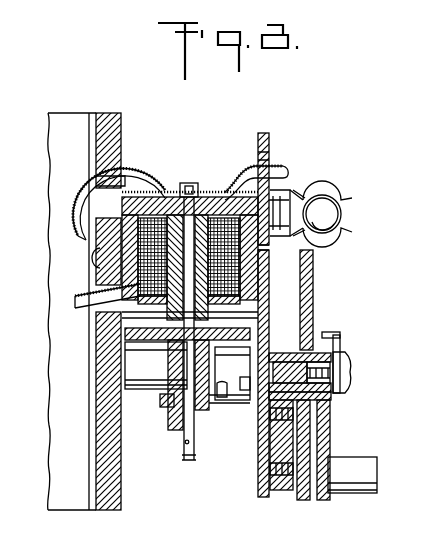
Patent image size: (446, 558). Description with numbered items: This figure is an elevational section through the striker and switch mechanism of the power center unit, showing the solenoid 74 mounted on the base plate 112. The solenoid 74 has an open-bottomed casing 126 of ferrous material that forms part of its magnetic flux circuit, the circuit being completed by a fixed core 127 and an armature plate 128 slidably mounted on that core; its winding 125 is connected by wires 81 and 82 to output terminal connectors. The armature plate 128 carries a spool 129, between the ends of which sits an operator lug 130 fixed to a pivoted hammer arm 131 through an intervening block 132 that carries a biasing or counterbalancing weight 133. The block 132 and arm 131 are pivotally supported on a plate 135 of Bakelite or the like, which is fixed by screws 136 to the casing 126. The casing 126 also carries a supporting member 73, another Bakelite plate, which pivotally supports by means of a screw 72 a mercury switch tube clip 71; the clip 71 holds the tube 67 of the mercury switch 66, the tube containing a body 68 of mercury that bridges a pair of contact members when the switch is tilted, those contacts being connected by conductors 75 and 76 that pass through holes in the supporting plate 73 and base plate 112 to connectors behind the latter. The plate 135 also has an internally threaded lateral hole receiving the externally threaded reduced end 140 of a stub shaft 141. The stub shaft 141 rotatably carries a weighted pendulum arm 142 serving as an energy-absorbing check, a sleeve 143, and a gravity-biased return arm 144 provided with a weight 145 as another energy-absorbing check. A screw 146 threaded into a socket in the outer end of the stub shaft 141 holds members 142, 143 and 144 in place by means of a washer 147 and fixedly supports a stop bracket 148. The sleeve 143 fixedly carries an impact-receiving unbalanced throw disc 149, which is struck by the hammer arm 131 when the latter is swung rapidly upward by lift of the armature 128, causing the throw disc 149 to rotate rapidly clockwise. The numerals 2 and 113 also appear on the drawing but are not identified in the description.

The apparatus 2 is at (3, 479).
The mercury switch 66 is at (353, 219).
The tube 67 is at (340, 203).
The body of mercury 68 is at (328, 228).
The mercury switch tube clip 71 is at (297, 186).
The screw 72 is at (297, 205).
The supporting member 73 is at (270, 140).
The solenoid 74 is at (157, 202).
The conductor 75 is at (238, 175).
The conductor 76 is at (218, 190).
The wire 81 is at (88, 296).
The wire 82 is at (88, 310).
The base plate 112 is at (121, 492).
The wall surface 113 is at (72, 512).
The winding 125 is at (97, 256).
The casing 126 is at (130, 200).
The fixed core 127 is at (191, 183).
The armature plate 128 is at (97, 368).
The spool 129 is at (165, 410).
The operator lug 130 is at (215, 407).
The hammer arm 131 is at (248, 404).
The block 132 is at (223, 400).
The counterbalancing weight 133 is at (144, 389).
The plate 135 is at (263, 318).
The screws 136 is at (271, 290).
The externally threaded reduced end 140 is at (271, 362).
The stub shaft 141 is at (343, 360).
The pendulum arm 142 is at (283, 493).
The sleeve 143 is at (331, 412).
The return arm 144 is at (322, 500).
The weight 145 is at (356, 457).
The screw 146 is at (351, 380).
The washer 147 is at (349, 392).
The stop bracket 148 is at (340, 335).
The throw disc 149 is at (313, 300).